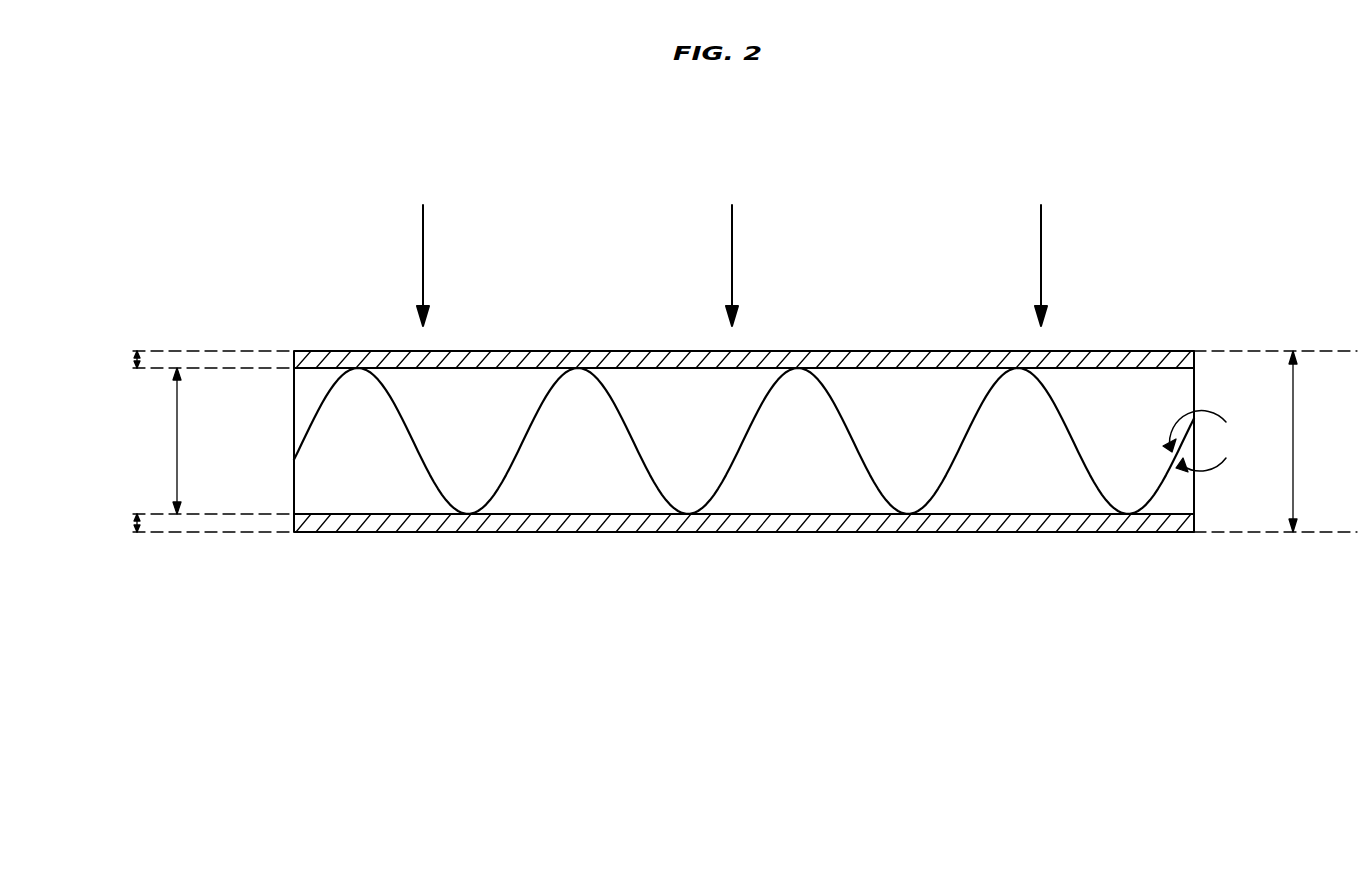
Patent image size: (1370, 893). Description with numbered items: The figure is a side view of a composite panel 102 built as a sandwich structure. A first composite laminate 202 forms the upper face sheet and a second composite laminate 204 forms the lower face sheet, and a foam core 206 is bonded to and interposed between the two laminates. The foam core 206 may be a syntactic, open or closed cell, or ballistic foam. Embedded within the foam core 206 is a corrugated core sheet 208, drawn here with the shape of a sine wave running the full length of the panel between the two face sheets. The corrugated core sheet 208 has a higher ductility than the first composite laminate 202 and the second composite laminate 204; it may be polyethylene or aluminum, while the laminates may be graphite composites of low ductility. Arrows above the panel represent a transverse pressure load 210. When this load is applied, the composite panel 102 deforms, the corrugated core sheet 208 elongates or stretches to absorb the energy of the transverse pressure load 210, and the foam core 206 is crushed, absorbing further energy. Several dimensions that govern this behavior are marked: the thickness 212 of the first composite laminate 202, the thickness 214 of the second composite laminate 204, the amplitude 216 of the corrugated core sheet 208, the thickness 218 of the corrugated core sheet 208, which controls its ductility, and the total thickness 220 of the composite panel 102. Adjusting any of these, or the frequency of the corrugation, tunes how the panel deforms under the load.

The composite panel 102 is at (937, 122).
The first composite laminate 202 is at (731, 325).
The second composite laminate 204 is at (375, 522).
The foam core 206 is at (294, 472).
The corrugated core sheet 208 is at (633, 437).
The transverse pressure load 210 is at (424, 247).
The thickness of first composite laminate 212 is at (131, 360).
The thickness of second composite laminate 214 is at (131, 522).
The amplitude 216 is at (177, 434).
The thickness of corrugated core sheet 218 is at (1204, 441).
The total thickness 220 is at (1294, 436).